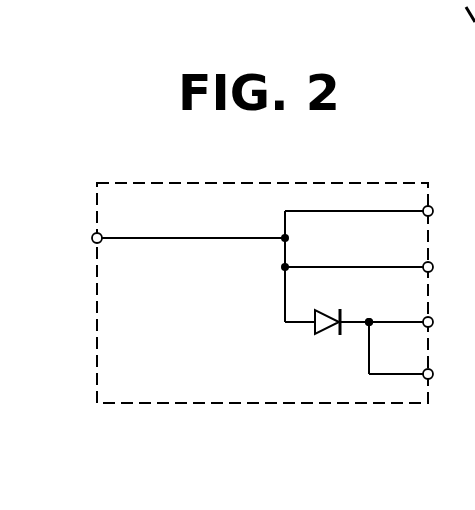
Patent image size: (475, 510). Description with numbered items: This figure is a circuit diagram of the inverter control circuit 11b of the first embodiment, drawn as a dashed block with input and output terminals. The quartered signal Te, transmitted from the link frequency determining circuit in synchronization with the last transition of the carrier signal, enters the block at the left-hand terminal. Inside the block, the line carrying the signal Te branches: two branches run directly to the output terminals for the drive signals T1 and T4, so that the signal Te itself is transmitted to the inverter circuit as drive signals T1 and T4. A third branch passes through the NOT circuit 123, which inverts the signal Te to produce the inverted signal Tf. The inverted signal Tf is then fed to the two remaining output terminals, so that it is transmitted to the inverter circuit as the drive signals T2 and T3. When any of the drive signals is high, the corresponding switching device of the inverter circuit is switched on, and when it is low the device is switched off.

The inverter control circuit 11b is at (408, 172).
The NOT circuit 123 is at (325, 334).
The signal Te is at (82, 240).
The drive signal T1 is at (442, 213).
The drive signal T2 is at (442, 324).
The drive signal T3 is at (442, 376).
The drive signal T4 is at (442, 269).
The inverted signal Tf is at (362, 308).